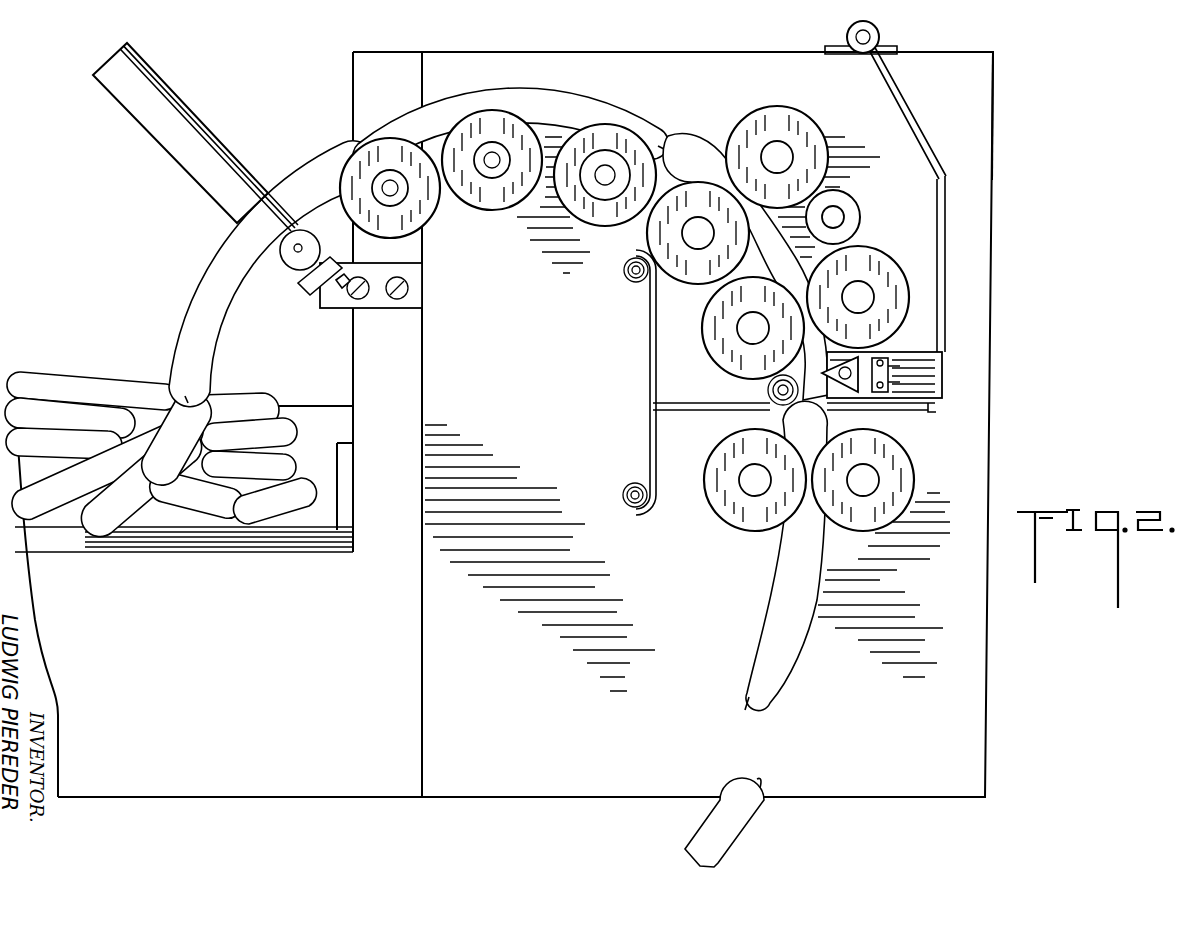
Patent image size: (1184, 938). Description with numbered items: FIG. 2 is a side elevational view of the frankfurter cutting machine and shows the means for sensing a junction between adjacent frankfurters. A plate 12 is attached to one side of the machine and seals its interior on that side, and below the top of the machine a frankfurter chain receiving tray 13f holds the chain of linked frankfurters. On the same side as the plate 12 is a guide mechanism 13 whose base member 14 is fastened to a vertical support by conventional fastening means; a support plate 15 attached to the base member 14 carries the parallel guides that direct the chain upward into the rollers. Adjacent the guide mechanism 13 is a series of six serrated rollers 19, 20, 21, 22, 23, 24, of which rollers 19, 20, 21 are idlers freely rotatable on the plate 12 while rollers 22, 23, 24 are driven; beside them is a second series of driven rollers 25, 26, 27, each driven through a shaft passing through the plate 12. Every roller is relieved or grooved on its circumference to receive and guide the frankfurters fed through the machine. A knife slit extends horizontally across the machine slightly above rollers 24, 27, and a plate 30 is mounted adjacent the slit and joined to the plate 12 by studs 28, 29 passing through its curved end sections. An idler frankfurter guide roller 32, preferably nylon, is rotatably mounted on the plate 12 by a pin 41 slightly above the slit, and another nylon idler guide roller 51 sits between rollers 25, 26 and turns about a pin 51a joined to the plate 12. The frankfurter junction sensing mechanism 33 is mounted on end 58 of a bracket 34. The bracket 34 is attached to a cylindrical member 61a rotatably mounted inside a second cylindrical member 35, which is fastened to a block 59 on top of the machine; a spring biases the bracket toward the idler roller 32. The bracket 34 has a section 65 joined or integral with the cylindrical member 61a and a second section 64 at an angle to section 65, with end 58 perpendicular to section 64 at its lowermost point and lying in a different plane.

The plate 12 is at (970, 612).
The guide mechanism 13 is at (195, 209).
The frankfurter chain receiving tray 13f is at (163, 548).
The base member 14 is at (420, 298).
The support plate 15 is at (318, 283).
The serrated roller 19 is at (425, 216).
The serrated roller 20 is at (505, 200).
The serrated roller 21 is at (630, 130).
The serrated roller 22 is at (690, 272).
The serrated roller 23 is at (724, 359).
The serrated roller 24 is at (722, 507).
The driven roller 25 is at (807, 107).
The driven roller 26 is at (898, 278).
The driven roller 27 is at (907, 488).
The stud 28 is at (626, 273).
The stud 29 is at (625, 485).
The plate 30 is at (648, 347).
The idler frankfurter guide roller 32 is at (760, 404).
The frankfurter junction sensing mechanism 33 is at (858, 395).
The bracket 34 is at (997, 183).
The second cylindrical member 35 is at (848, 31).
The pin 41 is at (768, 389).
The idler guide roller 51 is at (848, 201).
The pin 51a is at (844, 217).
The end 58 is at (944, 378).
The block 59 is at (905, 53).
The cylindrical member 61a is at (876, 37).
The second section 64 is at (940, 232).
The section 65 is at (928, 153).